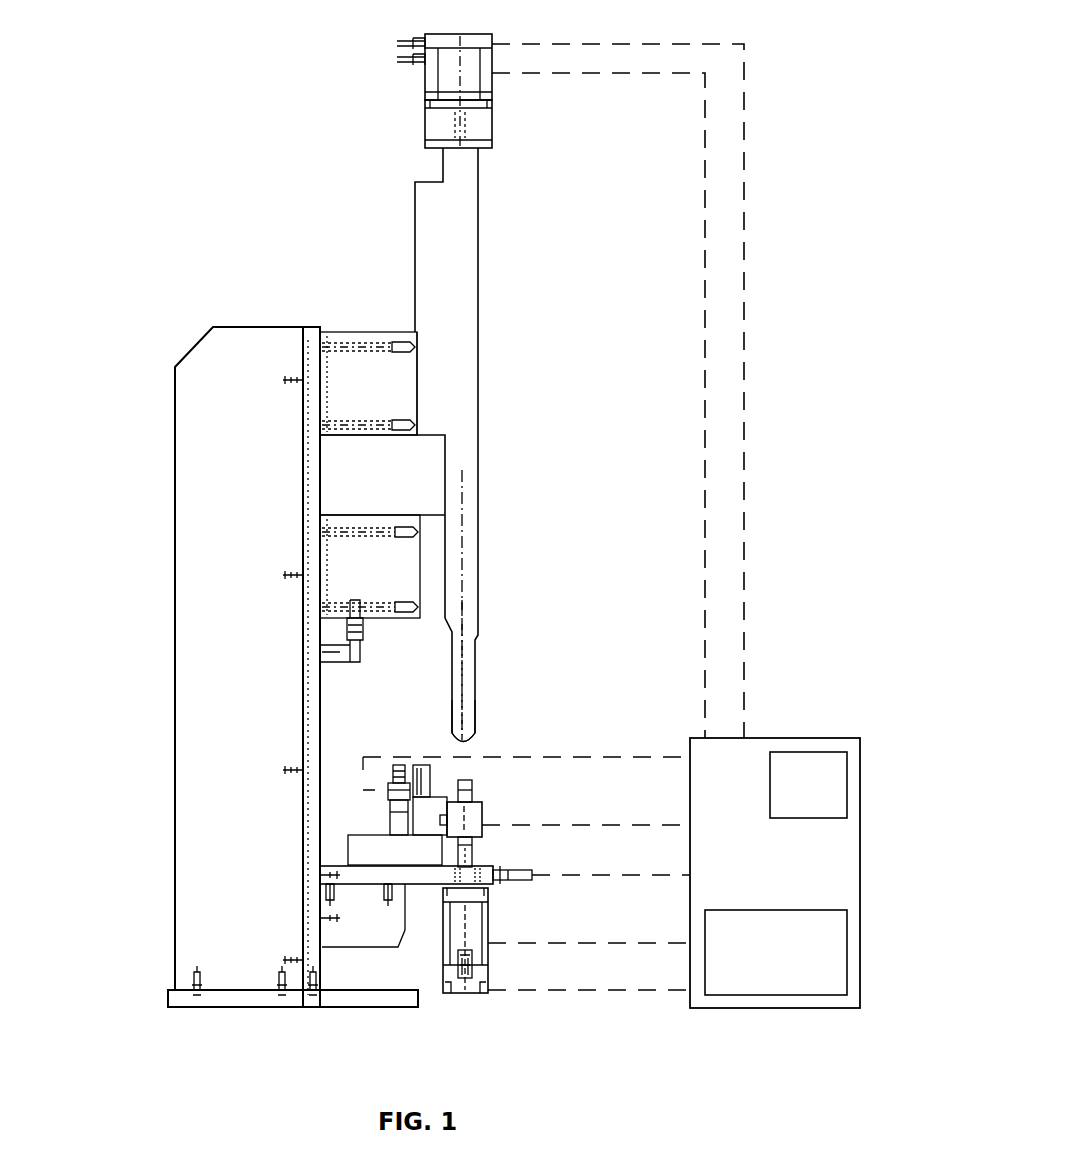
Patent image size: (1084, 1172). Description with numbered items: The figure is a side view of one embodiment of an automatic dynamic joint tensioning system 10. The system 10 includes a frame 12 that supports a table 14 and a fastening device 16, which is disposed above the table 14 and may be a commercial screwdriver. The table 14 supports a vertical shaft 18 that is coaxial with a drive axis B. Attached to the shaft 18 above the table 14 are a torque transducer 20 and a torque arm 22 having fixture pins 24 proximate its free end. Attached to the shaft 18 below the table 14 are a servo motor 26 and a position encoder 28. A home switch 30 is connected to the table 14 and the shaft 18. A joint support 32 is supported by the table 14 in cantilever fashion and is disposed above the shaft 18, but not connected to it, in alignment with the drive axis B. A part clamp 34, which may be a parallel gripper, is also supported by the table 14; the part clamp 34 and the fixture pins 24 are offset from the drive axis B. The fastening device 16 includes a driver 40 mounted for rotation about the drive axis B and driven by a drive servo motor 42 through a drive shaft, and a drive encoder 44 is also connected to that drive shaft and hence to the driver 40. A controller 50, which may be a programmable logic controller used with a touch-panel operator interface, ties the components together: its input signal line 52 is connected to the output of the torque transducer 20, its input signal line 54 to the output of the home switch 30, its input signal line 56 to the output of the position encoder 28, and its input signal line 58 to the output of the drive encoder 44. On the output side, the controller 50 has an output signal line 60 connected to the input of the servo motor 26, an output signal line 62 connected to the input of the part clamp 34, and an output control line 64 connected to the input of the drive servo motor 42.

The system 10 is at (140, 460).
The frame 12 is at (175, 836).
The table 14 is at (423, 885).
The fastening device 16 is at (483, 378).
The vertical shaft 18 is at (472, 852).
The torque transducer 20 is at (483, 815).
The torque arm 22 is at (443, 800).
The fixture pins 24 is at (418, 765).
The servo motor 26 is at (490, 928).
The position encoder 28 is at (490, 978).
The home switch 30 is at (518, 882).
The joint support 32 is at (472, 786).
The part clamp 34 is at (395, 768).
The driver 40 is at (470, 738).
The drive servo motor 42 is at (493, 82).
The drive encoder 44 is at (493, 40).
The controller 50 is at (862, 836).
The input signal line 52 is at (596, 827).
The input signal line 54 is at (602, 878).
The input signal line 56 is at (596, 992).
The input signal line 58 is at (668, 46).
The output signal line 60 is at (612, 946).
The output signal line 62 is at (597, 762).
The output control line 64 is at (660, 75).
The drive axis B is at (465, 602).